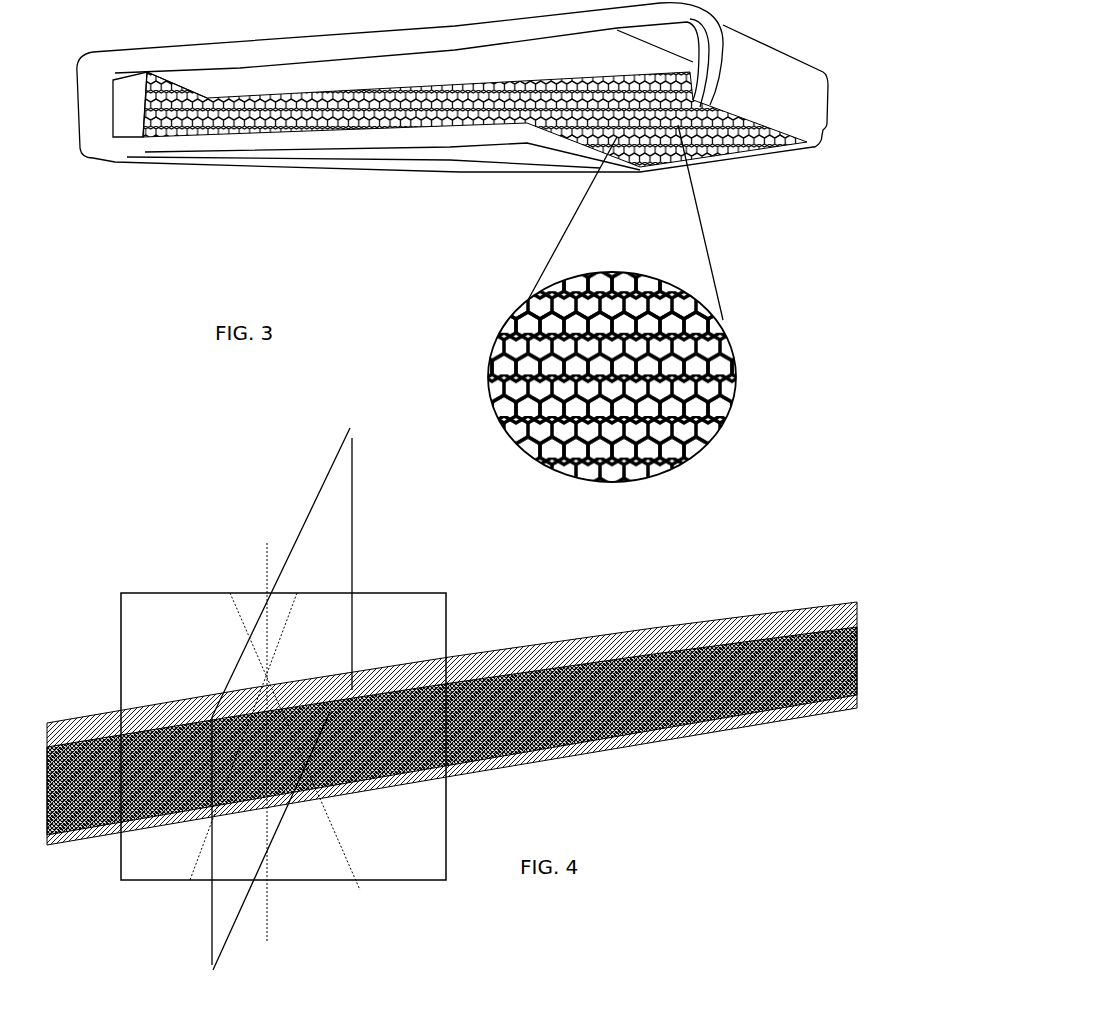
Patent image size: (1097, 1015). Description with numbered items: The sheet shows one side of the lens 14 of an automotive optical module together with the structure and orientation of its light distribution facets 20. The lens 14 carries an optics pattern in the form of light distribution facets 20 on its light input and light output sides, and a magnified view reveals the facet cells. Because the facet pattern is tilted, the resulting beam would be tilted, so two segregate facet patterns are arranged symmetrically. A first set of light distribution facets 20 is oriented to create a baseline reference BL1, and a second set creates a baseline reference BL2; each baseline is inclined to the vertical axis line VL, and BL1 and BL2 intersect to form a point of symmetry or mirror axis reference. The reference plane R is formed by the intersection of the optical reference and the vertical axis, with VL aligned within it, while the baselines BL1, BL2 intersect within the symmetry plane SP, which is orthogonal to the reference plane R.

In FIG. 3, the lens 14 is at (142, 155).
In FIG. 3, the light distribution facets 20 is at (508, 356).
In FIG. 4, the reference plane R is at (293, 684).
In FIG. 4, the vertical axis line VL is at (277, 732).
In FIG. 4, the baseline reference BL1 is at (350, 858).
In FIG. 4, the baseline reference BL2 is at (167, 860).
In FIG. 4, the symmetry plane SP is at (446, 593).